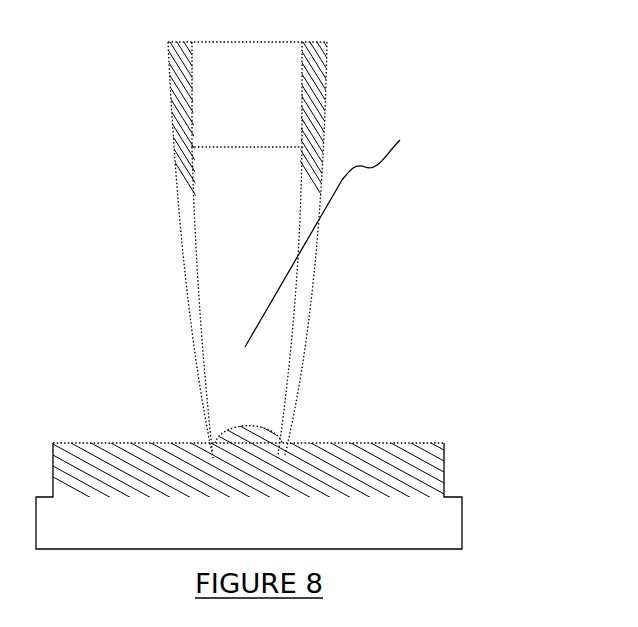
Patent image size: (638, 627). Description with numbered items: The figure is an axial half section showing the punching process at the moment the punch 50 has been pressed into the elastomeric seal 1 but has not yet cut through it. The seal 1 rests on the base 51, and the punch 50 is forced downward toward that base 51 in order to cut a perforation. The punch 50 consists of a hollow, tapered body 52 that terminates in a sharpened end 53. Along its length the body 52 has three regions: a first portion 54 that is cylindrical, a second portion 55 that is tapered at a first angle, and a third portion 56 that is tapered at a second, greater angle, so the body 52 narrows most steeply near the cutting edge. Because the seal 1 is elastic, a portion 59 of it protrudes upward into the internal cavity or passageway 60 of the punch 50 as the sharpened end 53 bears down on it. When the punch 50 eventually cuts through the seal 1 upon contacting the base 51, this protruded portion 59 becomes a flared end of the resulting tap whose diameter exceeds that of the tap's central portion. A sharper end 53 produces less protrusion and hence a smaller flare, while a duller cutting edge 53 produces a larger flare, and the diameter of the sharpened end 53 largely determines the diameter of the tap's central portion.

The seal 1 is at (444, 443).
The punch 50 is at (337, 252).
The base 51 is at (415, 513).
The body 52 is at (190, 281).
The sharpened end 53 is at (280, 453).
The first portion 54 is at (178, 107).
The second portion 55 is at (188, 225).
The third portion 56 is at (204, 423).
The protruded portion 59 is at (256, 422).
The internal cavity 60 is at (341, 238).